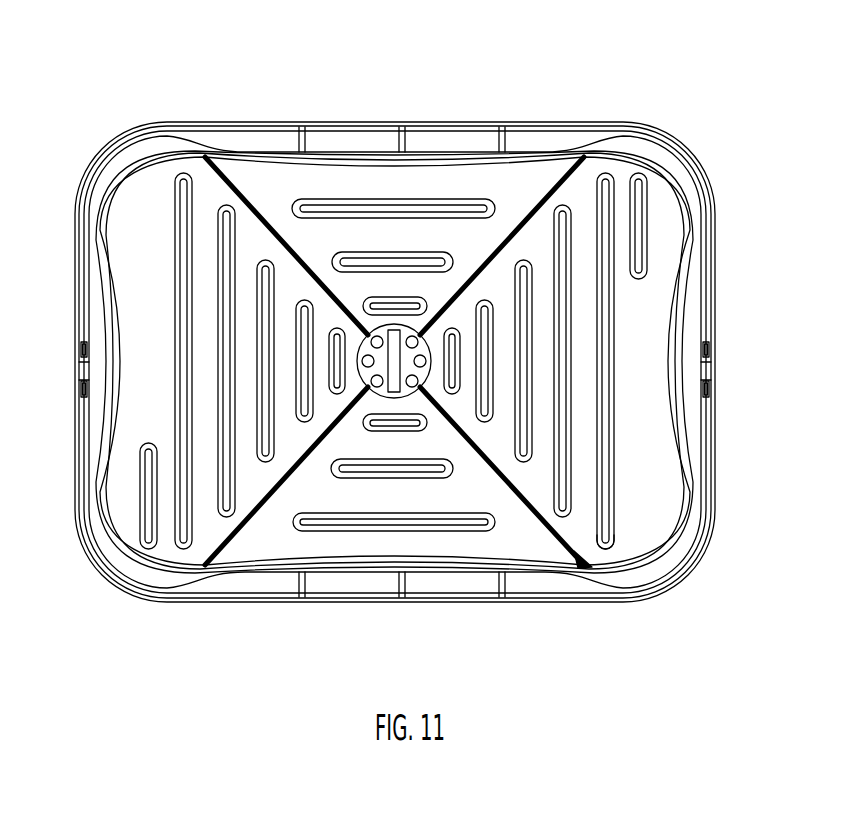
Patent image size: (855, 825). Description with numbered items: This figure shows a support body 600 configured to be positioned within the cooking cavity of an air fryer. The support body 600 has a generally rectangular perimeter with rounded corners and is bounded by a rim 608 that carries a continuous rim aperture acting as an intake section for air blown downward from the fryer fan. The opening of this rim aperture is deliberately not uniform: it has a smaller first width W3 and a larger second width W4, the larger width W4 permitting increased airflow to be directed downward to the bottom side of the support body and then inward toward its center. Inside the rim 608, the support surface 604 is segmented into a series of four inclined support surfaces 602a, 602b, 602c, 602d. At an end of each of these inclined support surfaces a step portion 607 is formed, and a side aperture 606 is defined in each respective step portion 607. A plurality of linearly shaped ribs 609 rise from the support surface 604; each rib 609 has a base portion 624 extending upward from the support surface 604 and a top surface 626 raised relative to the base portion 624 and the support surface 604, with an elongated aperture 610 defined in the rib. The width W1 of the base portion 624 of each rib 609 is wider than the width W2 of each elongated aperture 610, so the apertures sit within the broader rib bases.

The support body 600 is at (737, 173).
The inclined support surface 602a is at (465, 182).
The inclined support surface 602b is at (657, 325).
The inclined support surface 602c is at (508, 545).
The inclined support surface 602d is at (133, 386).
The support surface 604 is at (307, 178).
The side aperture 606 is at (587, 567).
The step portion 607 is at (567, 558).
The rim 608 is at (149, 119).
The rib 609 is at (684, 369).
The elongated aperture 610 is at (612, 542).
The base portion 624 is at (687, 572).
The top surface 626 is at (608, 490).
The width of base portion W1 is at (425, 500).
The width of elongated aperture W2 is at (352, 509).
The first width of rim aperture W3 is at (243, 178).
The second width of rim aperture W4 is at (385, 193).